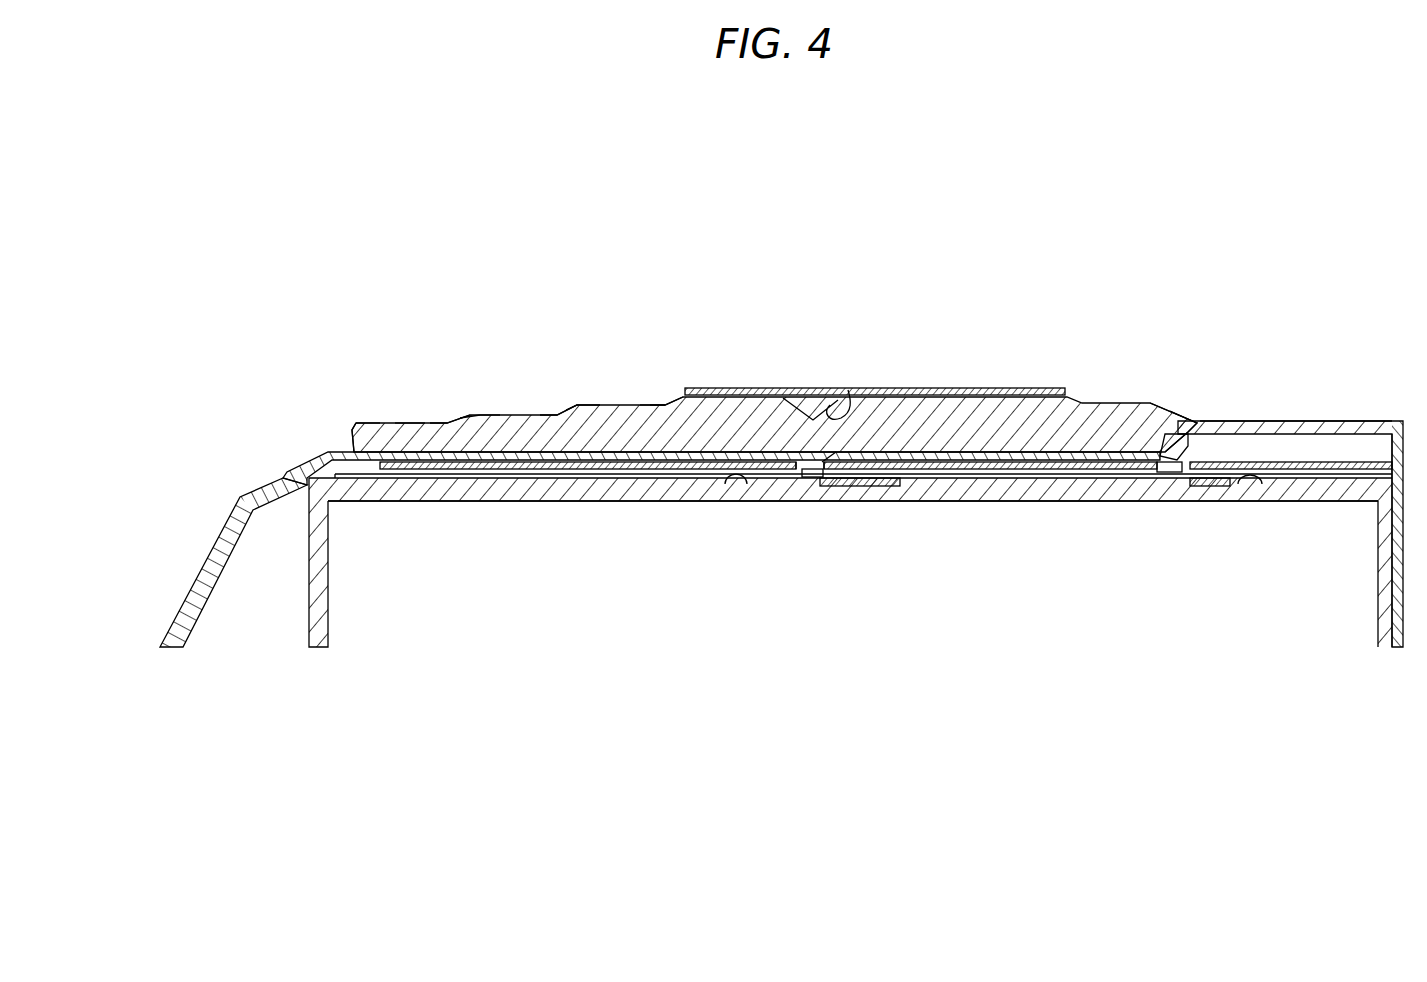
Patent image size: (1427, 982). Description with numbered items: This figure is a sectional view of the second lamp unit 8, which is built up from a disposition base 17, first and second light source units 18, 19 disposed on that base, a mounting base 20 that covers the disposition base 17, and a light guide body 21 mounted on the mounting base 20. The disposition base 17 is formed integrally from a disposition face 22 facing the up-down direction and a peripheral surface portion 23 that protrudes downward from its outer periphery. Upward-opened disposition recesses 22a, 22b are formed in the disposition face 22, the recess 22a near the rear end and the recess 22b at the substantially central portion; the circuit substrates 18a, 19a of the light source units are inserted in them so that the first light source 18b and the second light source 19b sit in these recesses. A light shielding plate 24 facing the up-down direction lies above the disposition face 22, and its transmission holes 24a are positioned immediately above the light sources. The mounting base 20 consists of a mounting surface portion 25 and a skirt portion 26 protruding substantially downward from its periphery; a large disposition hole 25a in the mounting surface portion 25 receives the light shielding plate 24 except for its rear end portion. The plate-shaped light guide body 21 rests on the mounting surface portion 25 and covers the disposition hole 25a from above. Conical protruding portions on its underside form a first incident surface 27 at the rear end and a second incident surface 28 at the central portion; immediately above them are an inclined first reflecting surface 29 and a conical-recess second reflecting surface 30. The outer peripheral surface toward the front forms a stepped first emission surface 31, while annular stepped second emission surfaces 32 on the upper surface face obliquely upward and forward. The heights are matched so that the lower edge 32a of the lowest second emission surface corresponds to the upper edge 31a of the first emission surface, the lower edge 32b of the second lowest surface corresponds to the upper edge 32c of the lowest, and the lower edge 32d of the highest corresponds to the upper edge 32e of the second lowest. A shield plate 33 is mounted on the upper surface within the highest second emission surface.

The second lamp unit 8 is at (1252, 198).
The disposition base 17 is at (617, 502).
The first light source unit 18 is at (1178, 460).
The circuit substrate 18a is at (1212, 486).
The first light source 18b is at (1312, 421).
The second light source unit 19 is at (815, 478).
The circuit substrate 19a is at (863, 486).
The second light source 19b is at (836, 452).
The mounting base 20 is at (310, 462).
The light guide body 21 is at (590, 412).
The disposition face 22 is at (982, 502).
The disposition recess 22a is at (1273, 486).
The disposition recess 22b is at (715, 486).
The peripheral surface portion 23 is at (328, 608).
The light shielding plate 24 is at (515, 468).
The transmission hole 24a is at (805, 466).
The mounting surface portion 25 is at (1223, 422).
The disposition hole 25a is at (1197, 421).
The skirt portion 26 is at (197, 575).
The first incident surface 27 is at (1157, 472).
The second incident surface 28 is at (799, 462).
The first reflecting surface 29 is at (1186, 436).
The second reflecting surface 30 is at (848, 397).
The first emission surface 31 is at (347, 428).
The upper edge 31a is at (352, 424).
The second emission surface 32 is at (443, 420).
The lower edge 32a is at (445, 421).
The lower edge 32b is at (466, 414).
The upper edge 32c is at (464, 416).
The lower edge 32d is at (575, 404).
The upper edge 32e is at (663, 402).
The shield plate 33 is at (724, 388).